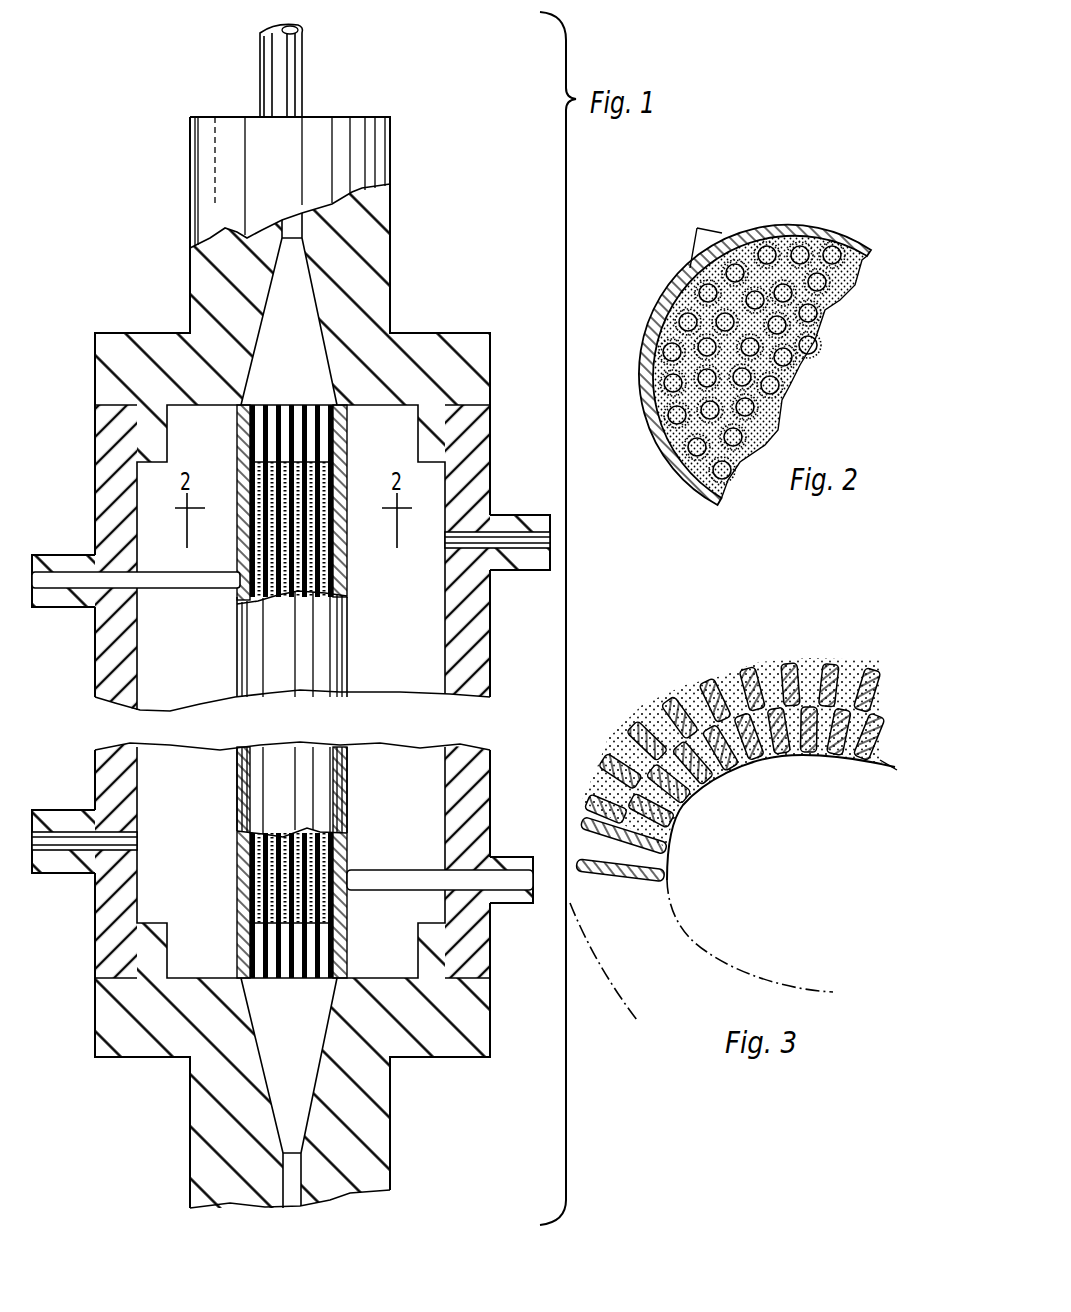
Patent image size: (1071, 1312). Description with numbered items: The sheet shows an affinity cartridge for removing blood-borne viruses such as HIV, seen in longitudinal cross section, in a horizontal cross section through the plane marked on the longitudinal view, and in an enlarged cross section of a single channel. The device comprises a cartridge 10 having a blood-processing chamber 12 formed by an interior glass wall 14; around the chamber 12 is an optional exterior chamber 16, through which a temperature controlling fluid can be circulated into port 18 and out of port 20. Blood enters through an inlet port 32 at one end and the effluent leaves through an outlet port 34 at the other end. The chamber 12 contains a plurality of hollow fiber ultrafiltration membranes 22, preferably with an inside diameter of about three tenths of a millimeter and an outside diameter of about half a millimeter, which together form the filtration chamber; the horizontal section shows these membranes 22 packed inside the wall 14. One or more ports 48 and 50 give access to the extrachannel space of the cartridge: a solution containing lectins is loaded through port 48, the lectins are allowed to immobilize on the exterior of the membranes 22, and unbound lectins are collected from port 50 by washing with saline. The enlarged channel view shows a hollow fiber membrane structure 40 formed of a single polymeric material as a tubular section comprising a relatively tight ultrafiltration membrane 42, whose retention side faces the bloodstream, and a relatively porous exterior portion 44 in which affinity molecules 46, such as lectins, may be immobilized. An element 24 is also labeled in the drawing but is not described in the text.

In FIG. 1, the cartridge 10 is at (447, 268).
In FIG. 1, the blood-processing chamber 12 is at (289, 653).
In FIG. 1, the interior glass wall 14 is at (347, 448).
In FIG. 2, the interior glass wall 14 is at (814, 233).
In FIG. 1, the exterior chamber 16 is at (199, 623).
In FIG. 1, the port 18 is at (70, 830).
In FIG. 1, the port 20 is at (530, 514).
In FIG. 1, the ultrafiltration membranes 22 is at (347, 568).
In FIG. 2, the ultrafiltration membranes 22 is at (704, 234).
In FIG. 1, the end plate 24 is at (347, 470).
In FIG. 1, the inlet port 32 is at (294, 1177).
In FIG. 1, the outlet port 34 is at (303, 61).
In FIG. 1, the port 48 is at (55, 590).
In FIG. 1, the port 50 is at (528, 893).
In FIG. 3, the hollow fiber membrane structure 40 is at (840, 628).
In FIG. 3, the ultrafiltration membrane 42 is at (752, 768).
In FIG. 3, the porous exterior portion 44 is at (682, 688).
In FIG. 3, the affinity molecules 46 is at (786, 665).